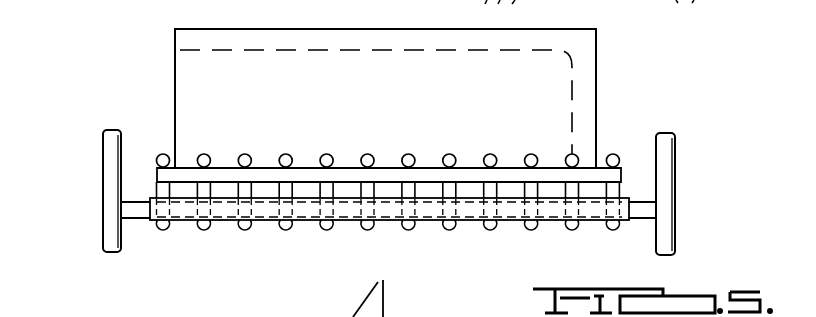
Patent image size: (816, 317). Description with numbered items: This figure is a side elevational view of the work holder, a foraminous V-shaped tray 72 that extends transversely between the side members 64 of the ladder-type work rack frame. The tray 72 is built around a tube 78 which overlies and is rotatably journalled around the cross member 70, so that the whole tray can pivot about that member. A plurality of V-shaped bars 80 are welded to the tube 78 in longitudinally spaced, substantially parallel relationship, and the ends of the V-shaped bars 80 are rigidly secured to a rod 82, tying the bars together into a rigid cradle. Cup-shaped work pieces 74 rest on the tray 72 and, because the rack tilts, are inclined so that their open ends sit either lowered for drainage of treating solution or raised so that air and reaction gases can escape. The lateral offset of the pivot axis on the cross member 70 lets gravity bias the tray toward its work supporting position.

The side members 64 is at (107, 157).
The cross member 70 is at (138, 218).
The V-shaped tray 72 is at (413, 156).
The work pieces 74 is at (586, 75).
The tube 78 is at (187, 220).
The V-shaped bars 80 is at (210, 153).
The rod 82 is at (346, 167).